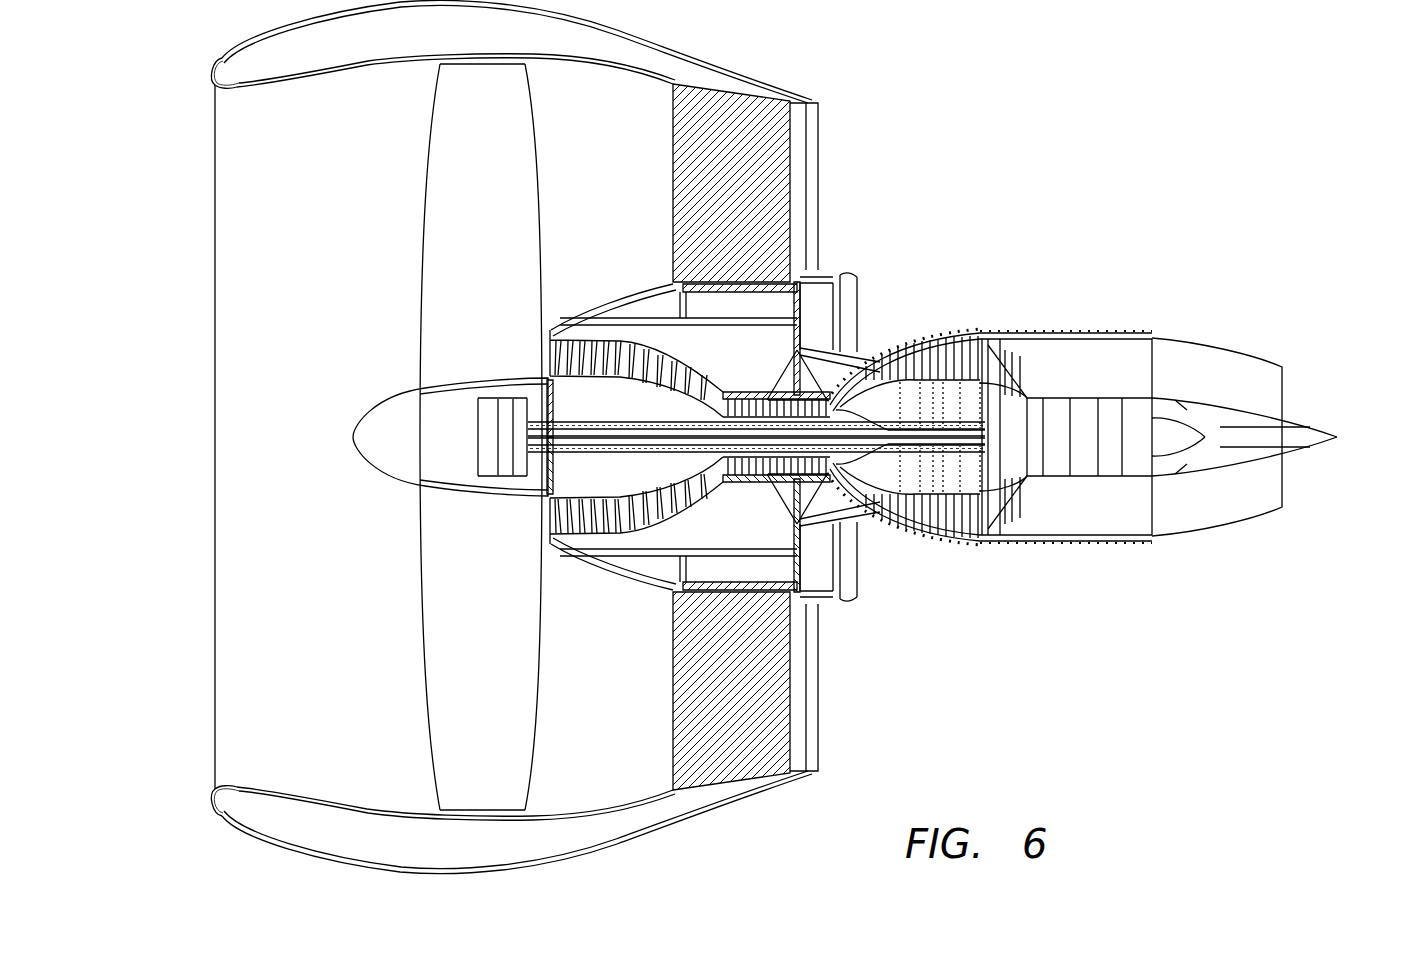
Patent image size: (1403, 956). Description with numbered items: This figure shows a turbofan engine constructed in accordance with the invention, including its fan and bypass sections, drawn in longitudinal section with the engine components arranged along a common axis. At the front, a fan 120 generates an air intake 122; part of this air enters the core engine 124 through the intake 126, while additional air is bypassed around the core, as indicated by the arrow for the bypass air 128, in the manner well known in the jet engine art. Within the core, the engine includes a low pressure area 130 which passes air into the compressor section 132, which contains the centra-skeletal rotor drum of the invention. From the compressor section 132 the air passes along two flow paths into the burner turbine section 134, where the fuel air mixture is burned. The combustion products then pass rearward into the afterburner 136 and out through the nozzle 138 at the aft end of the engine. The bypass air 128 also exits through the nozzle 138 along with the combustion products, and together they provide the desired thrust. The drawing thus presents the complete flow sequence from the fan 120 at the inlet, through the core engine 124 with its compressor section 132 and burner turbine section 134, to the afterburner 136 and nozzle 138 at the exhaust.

The fan 120 is at (440, 240).
The air intake 122 is at (264, 178).
The core engine 124 is at (886, 313).
The intake 126 is at (556, 360).
The bypass air 128 is at (740, 163).
The low pressure area 130 is at (586, 515).
The compressor section 132 is at (742, 484).
The burner turbine section 134 is at (884, 547).
The afterburner 136 is at (1018, 508).
The nozzle 138 is at (1250, 380).